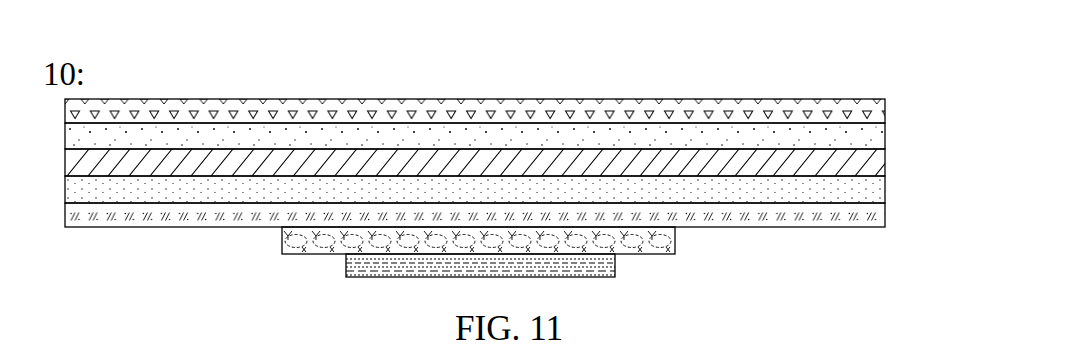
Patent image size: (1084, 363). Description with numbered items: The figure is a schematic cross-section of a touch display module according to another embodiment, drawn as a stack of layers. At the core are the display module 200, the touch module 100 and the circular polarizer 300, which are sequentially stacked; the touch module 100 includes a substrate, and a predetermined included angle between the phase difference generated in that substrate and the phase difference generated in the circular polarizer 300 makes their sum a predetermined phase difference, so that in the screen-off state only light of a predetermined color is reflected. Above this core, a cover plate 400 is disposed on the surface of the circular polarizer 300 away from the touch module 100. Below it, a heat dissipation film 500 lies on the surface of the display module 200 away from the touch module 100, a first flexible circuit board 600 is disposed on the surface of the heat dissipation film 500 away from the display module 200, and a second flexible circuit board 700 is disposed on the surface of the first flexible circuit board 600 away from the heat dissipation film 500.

The touch module 100 is at (847, 170).
The display module 200 is at (852, 187).
The circular polarizer 300 is at (850, 140).
The cover plate 400 is at (851, 113).
The heat dissipation film 500 is at (850, 217).
The first flexible circuit board 600 is at (668, 243).
The second flexible circuit board 700 is at (610, 273).